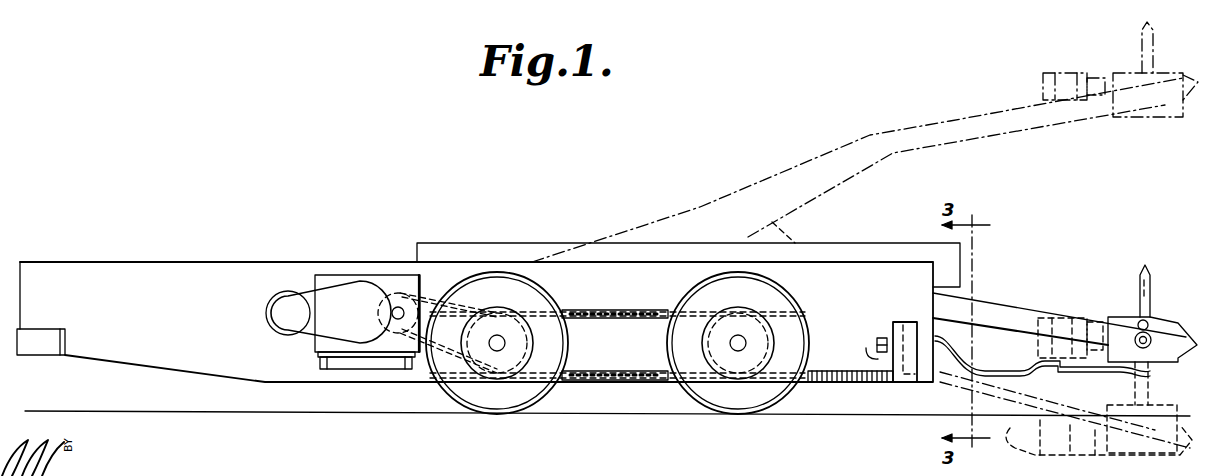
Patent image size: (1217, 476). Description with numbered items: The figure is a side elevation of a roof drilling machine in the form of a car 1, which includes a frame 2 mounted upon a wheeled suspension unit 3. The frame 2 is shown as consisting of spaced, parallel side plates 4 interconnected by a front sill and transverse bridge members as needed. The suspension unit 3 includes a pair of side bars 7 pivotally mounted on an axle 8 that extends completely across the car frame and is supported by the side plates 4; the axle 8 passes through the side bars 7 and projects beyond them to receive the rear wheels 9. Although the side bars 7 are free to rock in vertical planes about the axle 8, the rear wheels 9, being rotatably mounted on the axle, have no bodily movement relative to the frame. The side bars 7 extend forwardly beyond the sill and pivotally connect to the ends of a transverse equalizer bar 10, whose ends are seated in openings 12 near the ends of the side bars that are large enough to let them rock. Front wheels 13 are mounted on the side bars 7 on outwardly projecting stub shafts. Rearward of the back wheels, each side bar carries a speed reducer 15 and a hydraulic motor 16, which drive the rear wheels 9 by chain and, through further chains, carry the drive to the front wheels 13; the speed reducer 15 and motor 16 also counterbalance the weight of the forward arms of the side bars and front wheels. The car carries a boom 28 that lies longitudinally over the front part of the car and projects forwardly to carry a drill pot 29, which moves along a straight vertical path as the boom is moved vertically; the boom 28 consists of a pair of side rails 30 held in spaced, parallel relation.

The car 1 is at (445, 230).
The frame 2 is at (871, 263).
The wheeled suspension unit 3 is at (842, 352).
The side plates 4 is at (855, 303).
The side bars 7 is at (652, 344).
The axle 8 is at (504, 345).
The rear wheels 9 is at (510, 400).
The transverse equalizer bar 10 is at (883, 337).
The openings 12 is at (863, 344).
The front wheels 13 is at (748, 402).
The speed reducer 15 is at (352, 292).
The hydraulic motor 16 is at (268, 304).
The boom 28 is at (1019, 310).
The drill pot 29 is at (1120, 318).
The side rails 30 is at (989, 313).